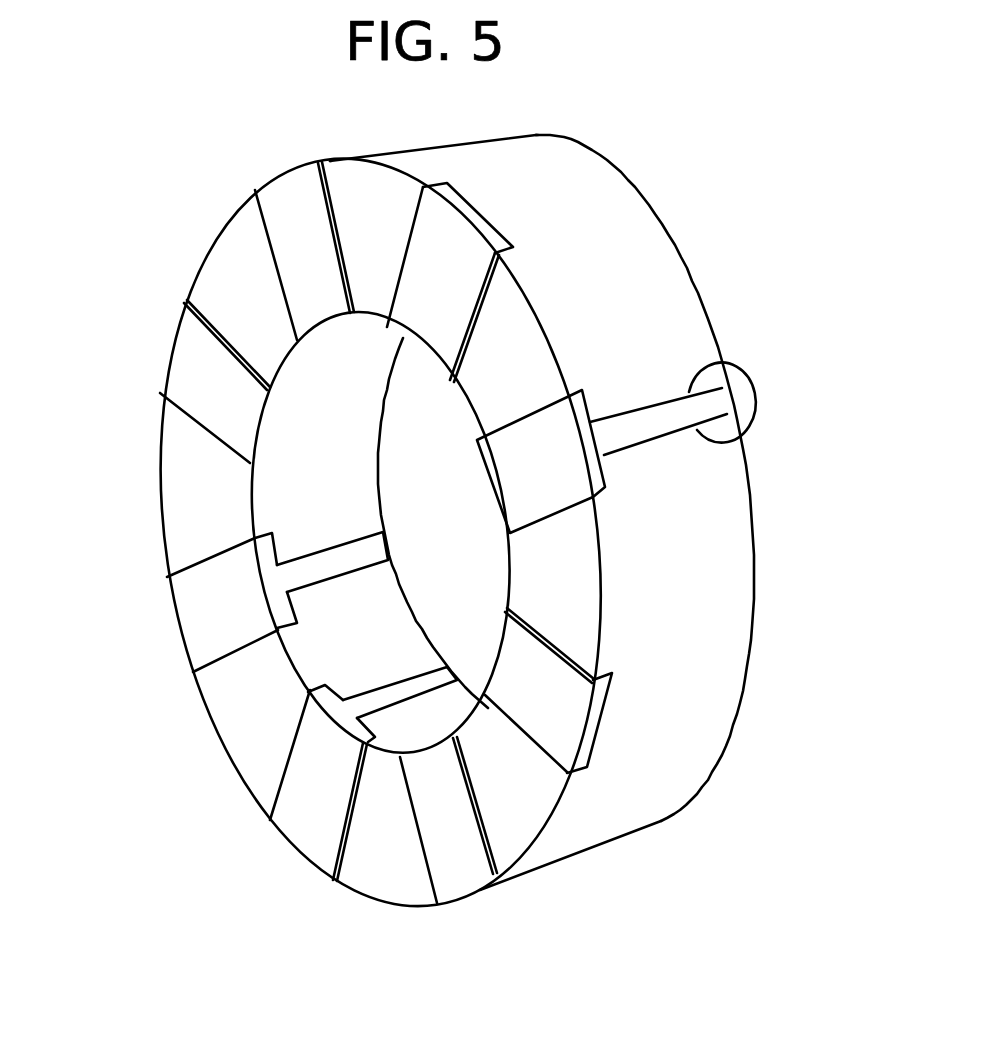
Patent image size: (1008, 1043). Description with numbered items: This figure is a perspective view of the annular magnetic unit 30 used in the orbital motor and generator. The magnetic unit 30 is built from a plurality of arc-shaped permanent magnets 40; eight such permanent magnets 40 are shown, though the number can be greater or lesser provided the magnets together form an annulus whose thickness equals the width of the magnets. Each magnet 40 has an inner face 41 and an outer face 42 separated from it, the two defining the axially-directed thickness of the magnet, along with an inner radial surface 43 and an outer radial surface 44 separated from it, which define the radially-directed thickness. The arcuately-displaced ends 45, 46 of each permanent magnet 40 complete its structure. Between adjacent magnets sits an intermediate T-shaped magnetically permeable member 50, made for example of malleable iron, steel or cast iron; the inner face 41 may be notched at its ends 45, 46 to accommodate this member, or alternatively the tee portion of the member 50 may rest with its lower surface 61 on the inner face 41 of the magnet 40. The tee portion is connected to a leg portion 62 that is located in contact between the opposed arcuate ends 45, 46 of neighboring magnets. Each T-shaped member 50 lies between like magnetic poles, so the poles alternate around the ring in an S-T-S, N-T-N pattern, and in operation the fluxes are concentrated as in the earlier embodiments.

The magnetic unit 30 is at (806, 297).
The permanent magnet 40 is at (670, 303).
The inner face 41 is at (178, 437).
The outer face 42 is at (673, 263).
The inner radial surface 43 is at (510, 550).
The outer radial surface 44 is at (645, 363).
The arcuately-displaced end 45 is at (553, 142).
The arcuately-displaced end 46 is at (622, 218).
The T-shaped magnetically permeable member 50 is at (183, 627).
The lower surface 61 is at (297, 610).
The leg portion 62 is at (338, 568).